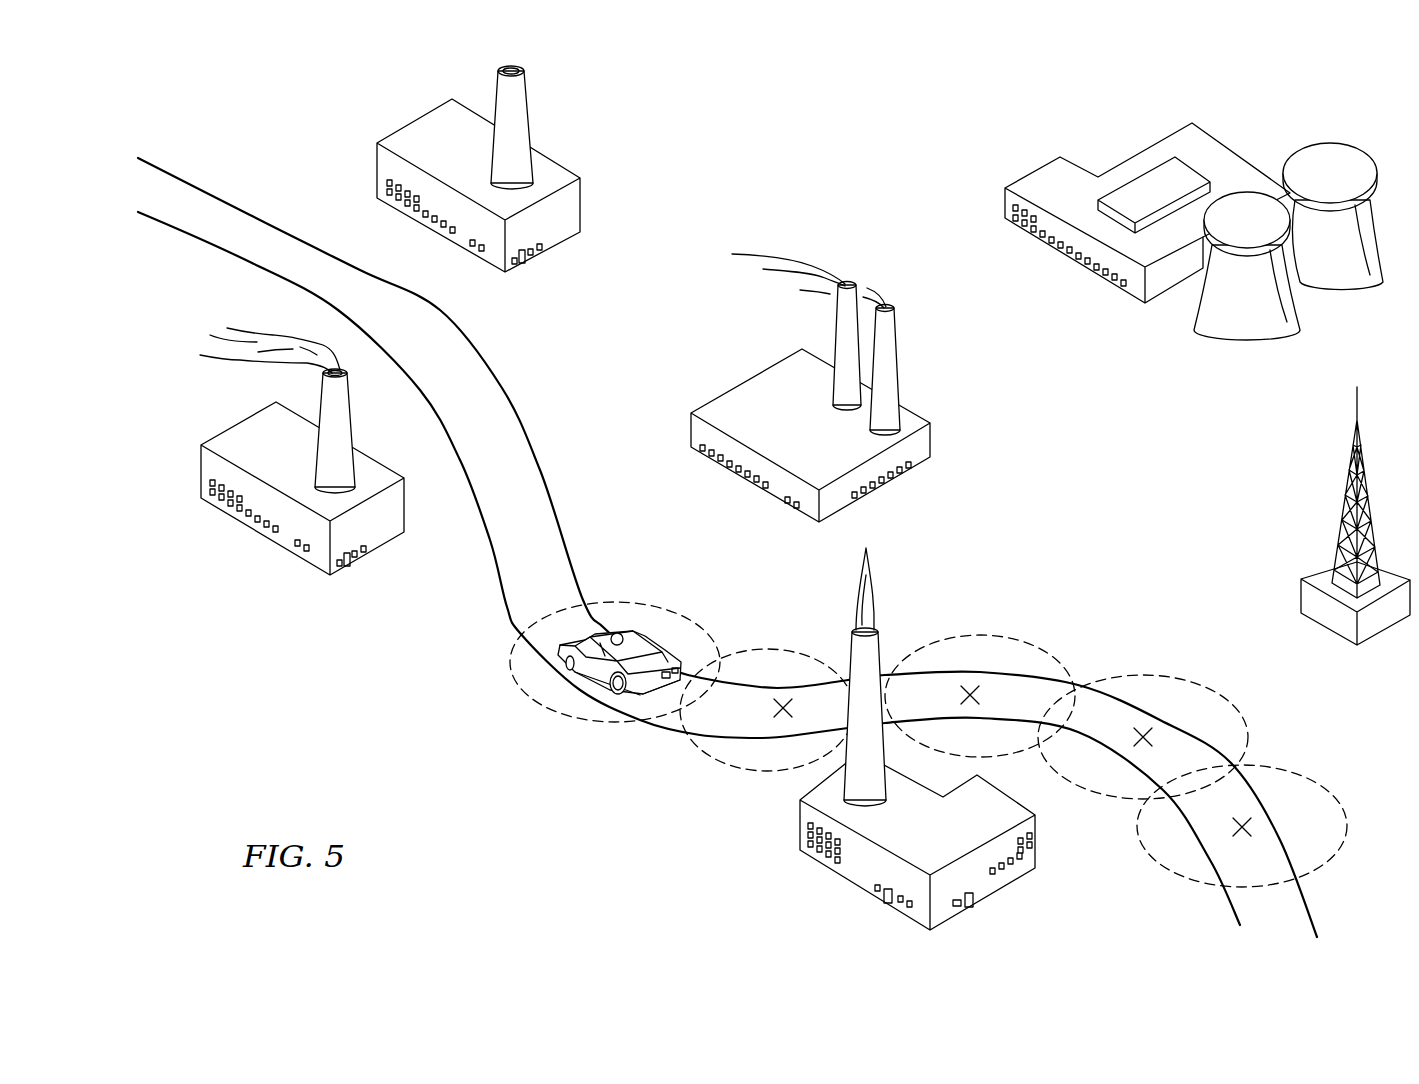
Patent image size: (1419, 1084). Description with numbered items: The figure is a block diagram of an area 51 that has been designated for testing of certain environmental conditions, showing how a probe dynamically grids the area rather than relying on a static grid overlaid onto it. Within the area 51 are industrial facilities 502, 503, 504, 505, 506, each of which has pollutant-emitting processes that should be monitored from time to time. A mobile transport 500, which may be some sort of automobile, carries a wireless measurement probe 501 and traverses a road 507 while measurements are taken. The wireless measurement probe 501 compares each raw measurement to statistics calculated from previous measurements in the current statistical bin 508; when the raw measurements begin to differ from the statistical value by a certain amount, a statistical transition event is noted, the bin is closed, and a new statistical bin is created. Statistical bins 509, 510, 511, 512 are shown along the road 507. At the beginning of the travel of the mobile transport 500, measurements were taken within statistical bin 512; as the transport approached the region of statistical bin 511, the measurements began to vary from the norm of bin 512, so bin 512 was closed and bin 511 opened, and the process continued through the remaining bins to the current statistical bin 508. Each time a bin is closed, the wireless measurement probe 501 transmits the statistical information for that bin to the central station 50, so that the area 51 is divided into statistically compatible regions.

The central station 50 is at (1301, 598).
The area 51 is at (336, 773).
The mobile transport 500 is at (658, 645).
The wireless measurement probe 501 is at (618, 632).
The industrial facility 502 is at (800, 832).
The industrial facility 503 is at (753, 385).
The industrial facility 504 is at (1040, 175).
The industrial facility 505 is at (201, 470).
The industrial facility 506 is at (580, 202).
The road 507 is at (502, 388).
The current statistical bin 508 is at (515, 680).
The statistical bin 509 is at (703, 750).
The statistical bin 510 is at (1020, 645).
The statistical bin 511 is at (1175, 680).
The statistical bin 512 is at (1347, 825).